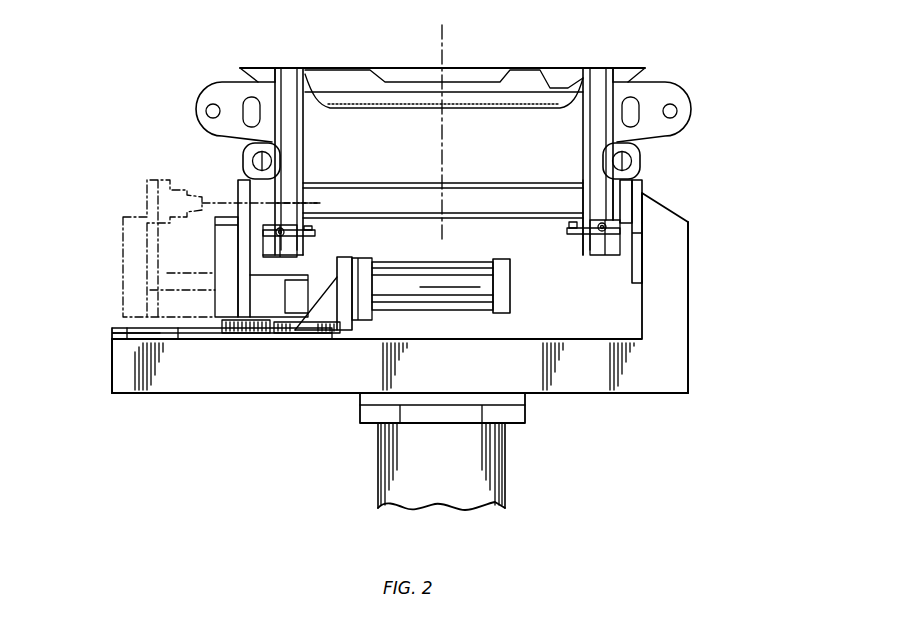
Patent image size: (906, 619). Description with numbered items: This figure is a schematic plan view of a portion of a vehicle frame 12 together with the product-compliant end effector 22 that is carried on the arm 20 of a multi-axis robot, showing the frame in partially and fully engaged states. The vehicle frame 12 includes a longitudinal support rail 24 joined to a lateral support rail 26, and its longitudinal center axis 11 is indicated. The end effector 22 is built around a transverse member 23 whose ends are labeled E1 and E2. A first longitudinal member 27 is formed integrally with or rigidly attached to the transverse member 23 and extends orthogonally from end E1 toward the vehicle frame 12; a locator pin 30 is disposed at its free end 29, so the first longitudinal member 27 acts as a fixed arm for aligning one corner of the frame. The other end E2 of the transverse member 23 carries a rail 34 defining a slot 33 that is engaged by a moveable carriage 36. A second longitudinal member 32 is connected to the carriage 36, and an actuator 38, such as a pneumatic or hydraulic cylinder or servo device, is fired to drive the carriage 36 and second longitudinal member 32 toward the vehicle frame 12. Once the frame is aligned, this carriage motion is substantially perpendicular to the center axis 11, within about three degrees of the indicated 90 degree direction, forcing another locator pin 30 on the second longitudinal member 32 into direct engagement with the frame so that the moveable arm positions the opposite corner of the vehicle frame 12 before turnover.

The longitudinal center axis 11 is at (442, 44).
The vehicle frame 12 is at (582, 41).
The arm 20 is at (447, 464).
The product-compliant end effector 22 is at (712, 296).
The transverse member 23 is at (447, 374).
The longitudinal support rail 24 is at (277, 82).
The lateral support rail 26 is at (517, 202).
The first longitudinal member 27 is at (674, 281).
The free end 29 is at (675, 190).
The locator pin 30 is at (168, 185).
The second longitudinal member 32 is at (108, 223).
The slot 33 is at (100, 328).
The rail 34 is at (112, 337).
The carriage 36 is at (258, 334).
The actuator 38 is at (436, 283).
The 90 degree rotation 90 is at (237, 164).
The one end of the transverse member E1 is at (688, 373).
The another end of the transverse member E2 is at (112, 371).